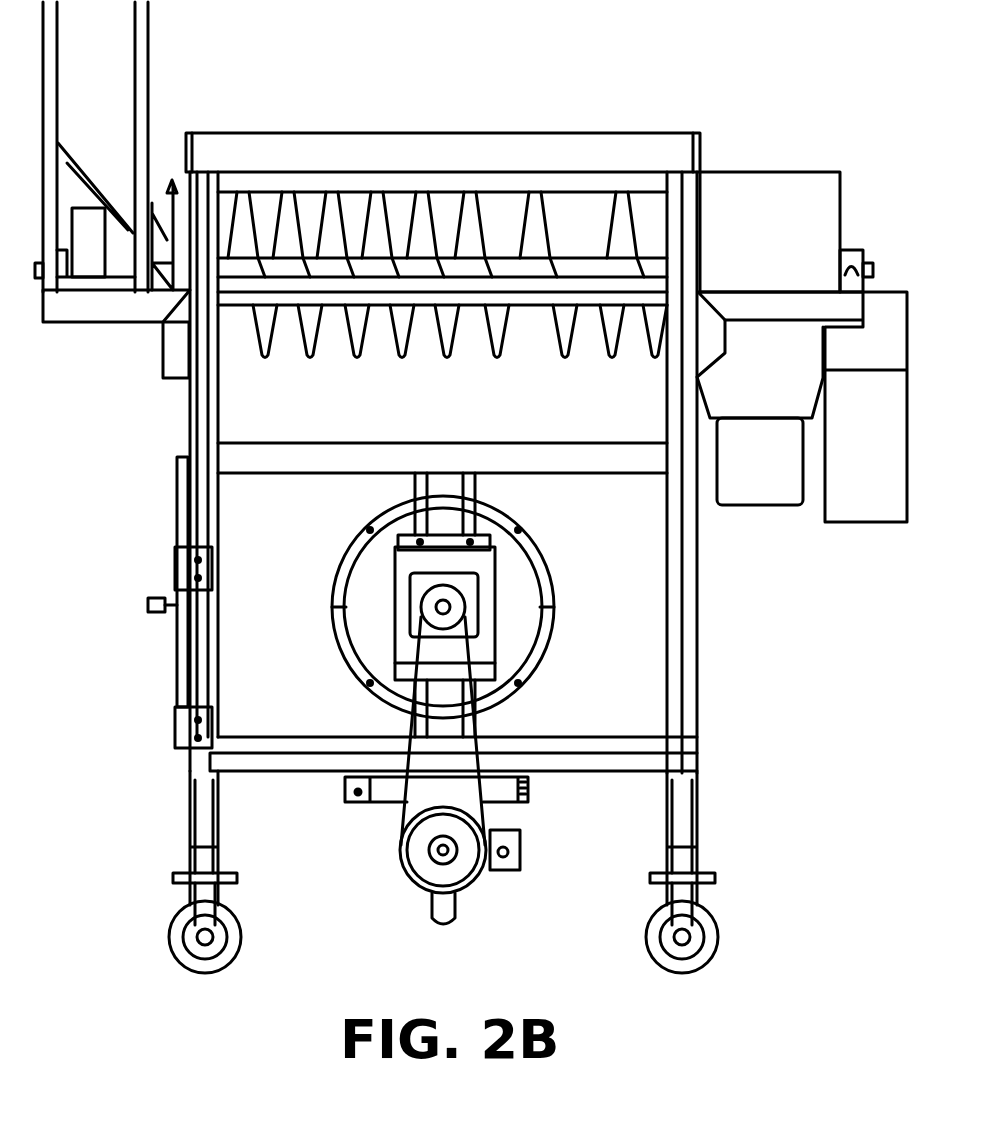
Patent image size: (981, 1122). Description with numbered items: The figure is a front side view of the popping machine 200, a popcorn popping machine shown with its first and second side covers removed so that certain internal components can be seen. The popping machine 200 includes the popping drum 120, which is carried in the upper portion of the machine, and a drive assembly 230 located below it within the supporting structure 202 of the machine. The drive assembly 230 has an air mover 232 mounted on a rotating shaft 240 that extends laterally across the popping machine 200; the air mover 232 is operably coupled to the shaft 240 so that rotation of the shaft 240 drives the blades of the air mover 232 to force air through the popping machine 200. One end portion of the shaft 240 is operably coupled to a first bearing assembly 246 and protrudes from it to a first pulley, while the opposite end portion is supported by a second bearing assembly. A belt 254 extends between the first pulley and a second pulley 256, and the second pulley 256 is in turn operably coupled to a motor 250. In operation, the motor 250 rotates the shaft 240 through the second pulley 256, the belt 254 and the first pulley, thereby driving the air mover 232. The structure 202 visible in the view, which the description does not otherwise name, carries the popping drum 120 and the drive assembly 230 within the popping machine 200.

The popping drum 120 is at (572, 213).
The popping machine 200 is at (745, 138).
The frame 202 is at (683, 573).
The drive assembly 230 is at (550, 684).
The air mover 232 is at (370, 598).
The rotating shaft 240 is at (452, 606).
The first bearing assembly 246 is at (427, 557).
The motor 250 is at (512, 868).
The belt 254 is at (410, 727).
The second pulley 256 is at (427, 870).